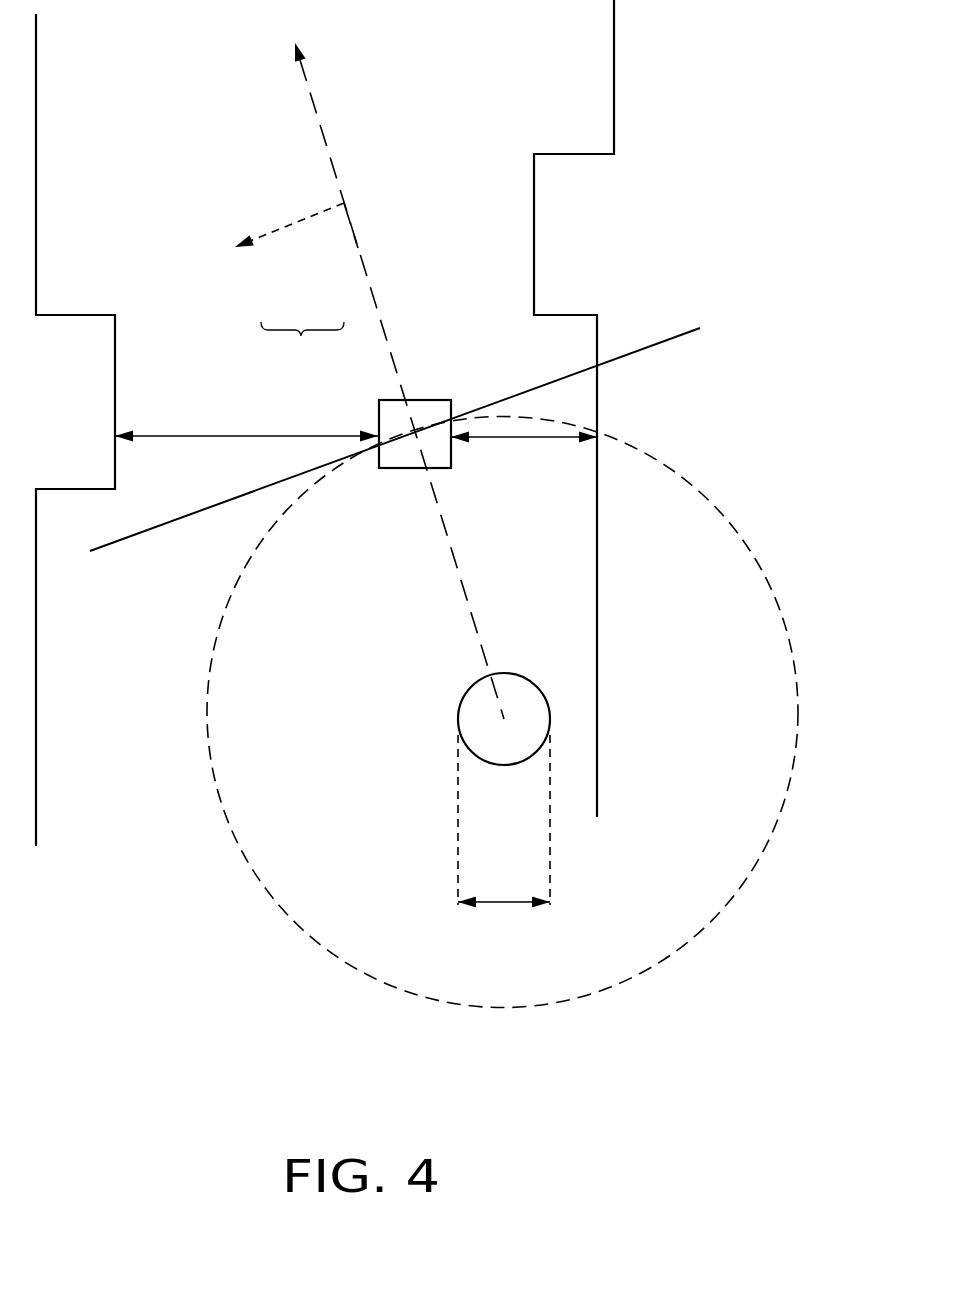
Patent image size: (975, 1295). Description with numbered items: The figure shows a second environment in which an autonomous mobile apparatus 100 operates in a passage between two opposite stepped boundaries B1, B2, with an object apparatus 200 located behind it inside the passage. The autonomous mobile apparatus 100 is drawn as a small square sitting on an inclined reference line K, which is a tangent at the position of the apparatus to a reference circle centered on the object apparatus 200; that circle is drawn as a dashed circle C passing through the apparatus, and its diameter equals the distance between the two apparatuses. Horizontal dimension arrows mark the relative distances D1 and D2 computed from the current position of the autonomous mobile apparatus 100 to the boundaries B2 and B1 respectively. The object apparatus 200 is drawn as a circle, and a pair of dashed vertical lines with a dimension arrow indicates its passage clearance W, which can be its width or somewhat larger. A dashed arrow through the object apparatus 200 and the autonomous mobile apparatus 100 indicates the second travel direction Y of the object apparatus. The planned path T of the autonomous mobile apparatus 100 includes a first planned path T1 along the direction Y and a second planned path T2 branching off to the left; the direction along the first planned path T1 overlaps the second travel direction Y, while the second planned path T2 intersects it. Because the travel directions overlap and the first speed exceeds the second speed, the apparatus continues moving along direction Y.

The boundary B1 is at (614, 72).
The boundary B2 is at (36, 115).
The reference line K is at (683, 334).
The circular region C is at (707, 500).
The second travel direction Y is at (316, 115).
The first planned path T1 is at (355, 240).
The second planned path T2 is at (280, 228).
The planned path T is at (302, 342).
The autonomous mobile apparatus 100 is at (425, 408).
The object apparatus 200 is at (524, 703).
The relative distance D1 is at (246, 424).
The relative distance D2 is at (524, 449).
The passage clearance W is at (504, 834).